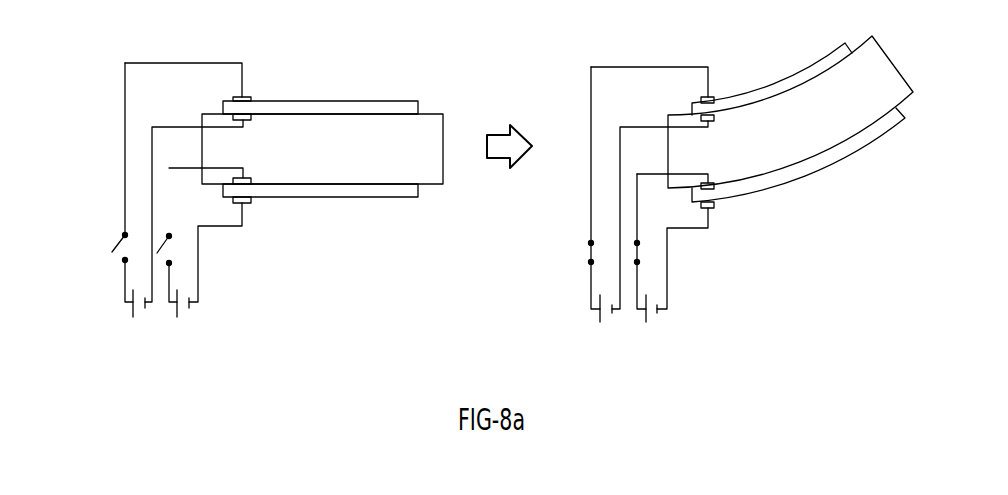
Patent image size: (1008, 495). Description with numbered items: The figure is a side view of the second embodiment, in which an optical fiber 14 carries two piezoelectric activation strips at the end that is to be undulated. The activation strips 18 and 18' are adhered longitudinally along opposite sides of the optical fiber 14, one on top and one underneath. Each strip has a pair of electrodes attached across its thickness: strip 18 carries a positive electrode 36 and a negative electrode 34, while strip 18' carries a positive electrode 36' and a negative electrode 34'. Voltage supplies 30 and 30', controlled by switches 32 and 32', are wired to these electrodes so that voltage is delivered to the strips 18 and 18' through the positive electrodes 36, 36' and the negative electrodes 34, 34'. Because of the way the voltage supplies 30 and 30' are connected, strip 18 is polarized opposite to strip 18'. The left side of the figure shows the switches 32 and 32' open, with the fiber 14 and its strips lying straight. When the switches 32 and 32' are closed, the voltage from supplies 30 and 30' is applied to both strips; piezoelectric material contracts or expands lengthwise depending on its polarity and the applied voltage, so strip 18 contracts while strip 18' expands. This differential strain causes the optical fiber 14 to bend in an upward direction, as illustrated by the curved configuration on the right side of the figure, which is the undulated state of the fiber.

The optical fiber 14 is at (420, 127).
The activation strip 18 is at (336, 69).
The activation strip 18' is at (330, 234).
The positive electrode 36 is at (279, 71).
The negative electrode 34 is at (263, 134).
The positive electrode 36' is at (292, 216).
The negative electrode 34' is at (268, 246).
The switch 32 is at (83, 261).
The switch 32' is at (111, 280).
The voltage supply 30 is at (152, 347).
The voltage supply 30' is at (203, 345).